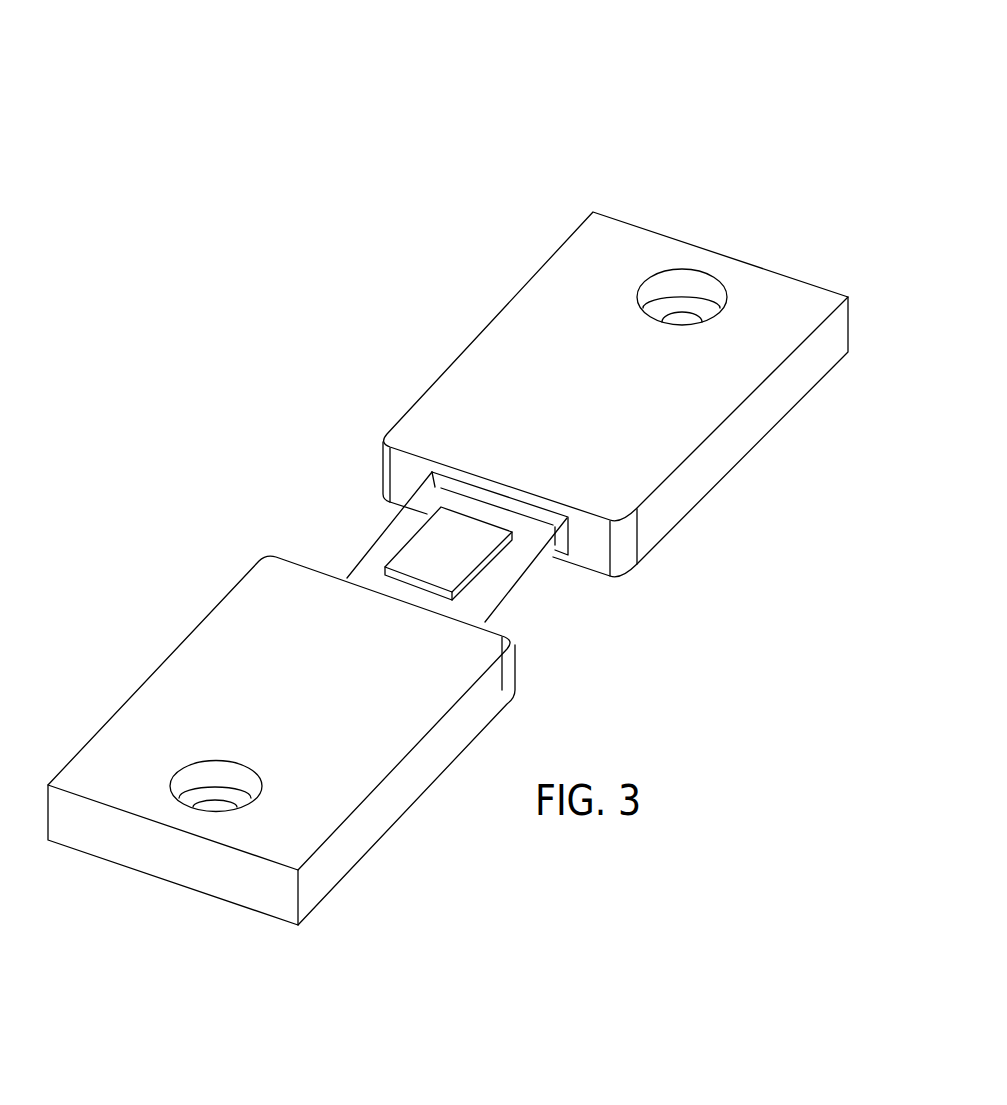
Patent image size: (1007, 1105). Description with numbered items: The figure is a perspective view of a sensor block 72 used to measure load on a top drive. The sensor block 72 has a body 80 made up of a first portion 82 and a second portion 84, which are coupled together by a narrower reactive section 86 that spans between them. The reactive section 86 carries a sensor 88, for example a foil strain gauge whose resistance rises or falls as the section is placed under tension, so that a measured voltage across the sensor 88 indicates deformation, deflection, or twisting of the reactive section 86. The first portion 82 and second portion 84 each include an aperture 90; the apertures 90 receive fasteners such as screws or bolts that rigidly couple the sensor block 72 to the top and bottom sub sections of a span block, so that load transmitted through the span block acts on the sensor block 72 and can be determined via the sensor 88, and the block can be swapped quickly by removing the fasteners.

The sensor block 72 is at (750, 107).
The body 80 is at (338, 325).
The first portion 82 is at (594, 212).
The second portion 84 is at (337, 865).
The reactive section 86 is at (525, 570).
The sensor 88 is at (428, 553).
The apertures 90 is at (686, 315).